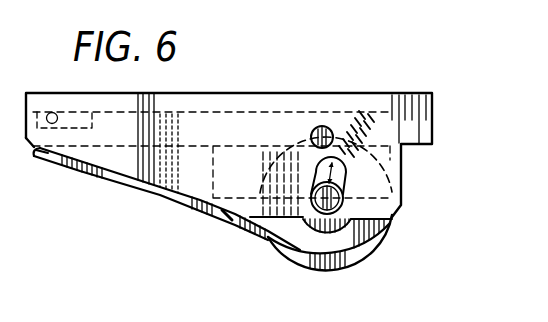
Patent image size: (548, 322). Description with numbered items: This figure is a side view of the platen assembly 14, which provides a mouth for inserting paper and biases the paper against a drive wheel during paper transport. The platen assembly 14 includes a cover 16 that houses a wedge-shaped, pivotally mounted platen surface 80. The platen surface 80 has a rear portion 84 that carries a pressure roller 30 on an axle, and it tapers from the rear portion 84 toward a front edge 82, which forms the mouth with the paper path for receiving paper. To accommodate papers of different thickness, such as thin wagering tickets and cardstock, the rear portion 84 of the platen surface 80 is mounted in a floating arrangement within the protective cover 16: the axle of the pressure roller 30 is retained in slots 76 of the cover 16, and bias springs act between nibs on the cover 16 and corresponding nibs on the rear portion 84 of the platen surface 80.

The cover 16 is at (254, 93).
The platen assembly 14 is at (170, 209).
The front edge 82 is at (45, 152).
The platen surface 80 is at (228, 217).
The slots 76 is at (347, 182).
The rear portion 84 is at (393, 223).
The pressure roller 30 is at (307, 268).